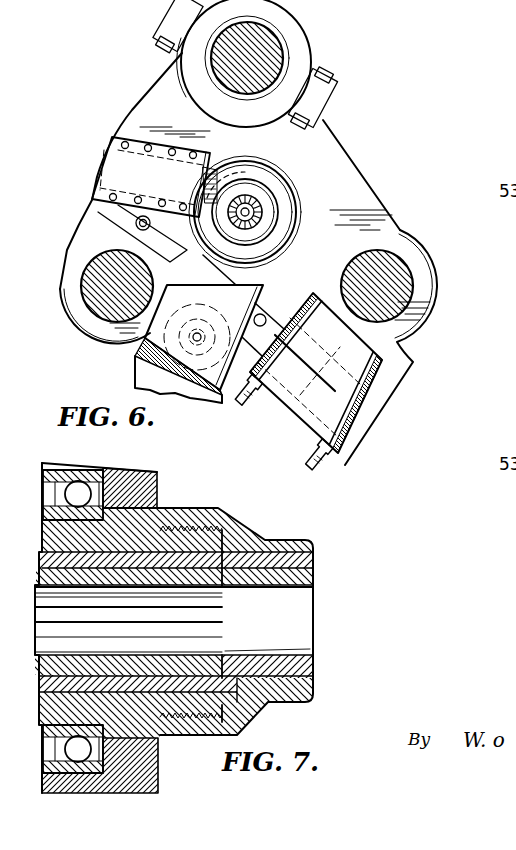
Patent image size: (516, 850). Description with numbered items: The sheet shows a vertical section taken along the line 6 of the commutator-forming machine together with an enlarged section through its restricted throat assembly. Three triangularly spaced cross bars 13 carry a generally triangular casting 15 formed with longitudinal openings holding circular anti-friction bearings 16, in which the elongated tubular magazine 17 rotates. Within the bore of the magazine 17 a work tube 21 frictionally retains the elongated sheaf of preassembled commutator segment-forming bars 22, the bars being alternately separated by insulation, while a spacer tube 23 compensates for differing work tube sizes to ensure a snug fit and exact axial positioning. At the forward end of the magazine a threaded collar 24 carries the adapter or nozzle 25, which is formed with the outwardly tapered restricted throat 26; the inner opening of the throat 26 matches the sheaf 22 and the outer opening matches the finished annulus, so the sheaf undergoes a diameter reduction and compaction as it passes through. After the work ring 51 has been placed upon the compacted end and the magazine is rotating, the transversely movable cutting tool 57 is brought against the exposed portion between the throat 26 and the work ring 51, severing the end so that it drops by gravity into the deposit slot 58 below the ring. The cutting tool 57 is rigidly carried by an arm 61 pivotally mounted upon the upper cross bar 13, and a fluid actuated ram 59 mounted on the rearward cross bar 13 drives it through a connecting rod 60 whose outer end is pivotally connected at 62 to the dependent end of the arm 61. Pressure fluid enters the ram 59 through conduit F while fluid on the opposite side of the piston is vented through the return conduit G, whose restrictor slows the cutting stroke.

In FIG. 6, the section line 6— 6 is at (245, 64).
In FIG. 6, the cross bars 13 is at (268, 50).
In FIG. 6, the casting 15 is at (358, 192).
In FIG. 7, the casting 15 is at (147, 487).
In FIG. 7, the anti-friction bearings 16 is at (92, 467).
In FIG. 7, the tubular magazine 17 is at (50, 530).
In FIG. 7, the work tube 21 is at (38, 570).
In FIG. 6, the sheaf of commutator segment-forming bars 22 is at (262, 228).
In FIG. 7, the sheaf of commutator segment-forming bars 22 is at (174, 619).
In FIG. 7, the spacer tube 23 is at (43, 682).
In FIG. 6, the threaded collar 24 is at (290, 180).
In FIG. 7, the threaded collar 24 is at (228, 512).
In FIG. 7, the adapter or nozzle 25 is at (315, 575).
In FIG. 7, the restricted throat 26 is at (295, 617).
In FIG. 6, the work ring 51 is at (270, 211).
In FIG. 6, the cutting tool 57 is at (238, 172).
In FIG. 6, the deposit slot 58 is at (155, 325).
In FIG. 6, the fluid actuated ram 59 is at (373, 405).
In FIG. 6, the connecting rod 60 is at (215, 280).
In FIG. 6, the arm 61 is at (143, 110).
In FIG. 6, the pivotal connection 62 is at (110, 222).
In FIG. 6, the conduit F is at (243, 403).
In FIG. 6, the return conduit G is at (315, 468).